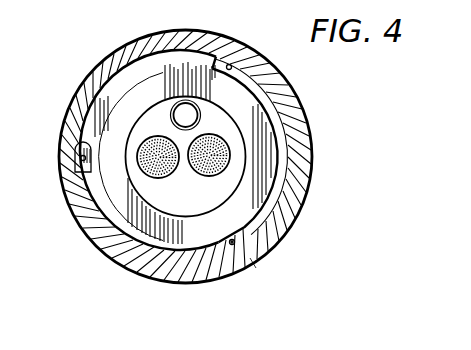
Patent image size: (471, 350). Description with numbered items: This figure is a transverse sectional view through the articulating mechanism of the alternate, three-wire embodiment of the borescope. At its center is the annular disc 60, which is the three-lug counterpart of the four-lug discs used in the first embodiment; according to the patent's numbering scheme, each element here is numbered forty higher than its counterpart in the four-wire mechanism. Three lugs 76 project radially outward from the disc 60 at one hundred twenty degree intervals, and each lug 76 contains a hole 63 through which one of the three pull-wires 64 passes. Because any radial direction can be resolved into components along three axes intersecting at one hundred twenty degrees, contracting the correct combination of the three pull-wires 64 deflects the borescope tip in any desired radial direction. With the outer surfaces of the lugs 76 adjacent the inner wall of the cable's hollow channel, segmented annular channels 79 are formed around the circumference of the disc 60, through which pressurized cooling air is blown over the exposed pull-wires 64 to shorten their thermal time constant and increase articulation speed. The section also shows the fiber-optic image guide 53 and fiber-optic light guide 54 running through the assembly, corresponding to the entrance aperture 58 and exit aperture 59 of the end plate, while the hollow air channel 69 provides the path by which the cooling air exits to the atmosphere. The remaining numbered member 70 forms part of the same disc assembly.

The disc 60 is at (300, 116).
The segmented annular channel 79 is at (112, 87).
The fiber-optic light guide 54 is at (230, 152).
The fiber-optic image guide 53 is at (140, 163).
The entrance aperture 58 is at (138, 160).
The exit aperture 59 is at (232, 163).
The hollow air channel 69 is at (170, 107).
The disc 70 is at (188, 117).
The lug 76 is at (218, 55).
The pull-wire 64 is at (238, 241).
The hole 63 is at (250, 258).